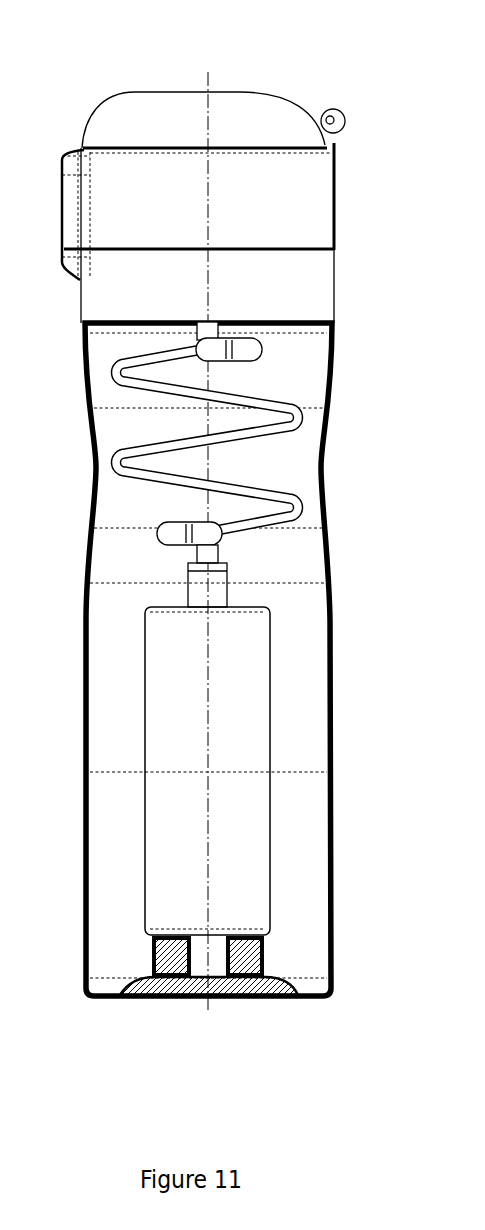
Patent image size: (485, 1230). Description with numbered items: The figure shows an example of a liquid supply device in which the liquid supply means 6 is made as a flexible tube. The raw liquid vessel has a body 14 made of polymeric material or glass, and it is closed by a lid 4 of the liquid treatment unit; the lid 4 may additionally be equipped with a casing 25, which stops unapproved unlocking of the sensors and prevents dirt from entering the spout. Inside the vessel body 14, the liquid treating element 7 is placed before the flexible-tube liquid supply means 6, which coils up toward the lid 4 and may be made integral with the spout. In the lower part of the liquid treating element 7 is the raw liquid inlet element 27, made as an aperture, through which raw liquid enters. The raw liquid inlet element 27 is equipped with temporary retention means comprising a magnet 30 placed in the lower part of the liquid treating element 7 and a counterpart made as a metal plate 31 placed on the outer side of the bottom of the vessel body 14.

The casing 25 is at (247, 122).
The lid 4 is at (317, 237).
The liquid supply means 6 is at (232, 438).
The body 14 is at (332, 605).
The liquid treating element 7 is at (242, 790).
The metal plate 31 is at (152, 995).
The raw liquid inlet element 27 is at (203, 995).
The magnet 30 is at (262, 995).